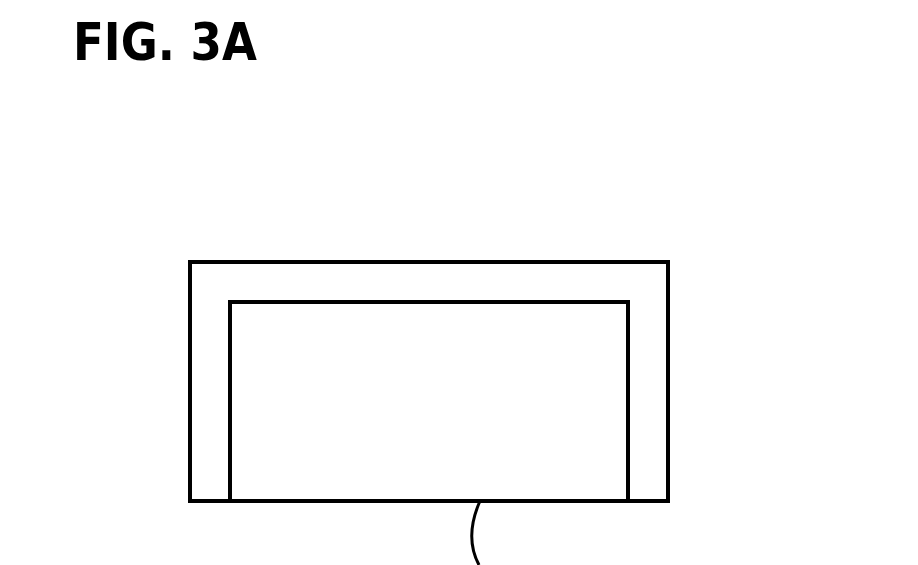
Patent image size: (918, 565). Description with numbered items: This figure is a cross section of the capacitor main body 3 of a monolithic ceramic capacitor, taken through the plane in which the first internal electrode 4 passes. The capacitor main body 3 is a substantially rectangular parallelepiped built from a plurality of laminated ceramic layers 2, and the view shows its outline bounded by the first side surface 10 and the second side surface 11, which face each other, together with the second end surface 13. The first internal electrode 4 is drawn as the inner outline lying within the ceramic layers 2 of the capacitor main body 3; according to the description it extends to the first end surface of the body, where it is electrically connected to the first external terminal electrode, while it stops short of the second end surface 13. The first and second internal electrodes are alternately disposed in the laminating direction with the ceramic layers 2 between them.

The capacitor main body 3 is at (99, 151).
The ceramic layers 2 is at (653, 290).
The first internal electrode 4 is at (603, 412).
The first side surface 10 is at (190, 379).
The second side surface 11 is at (670, 470).
The second end surface 13 is at (378, 260).